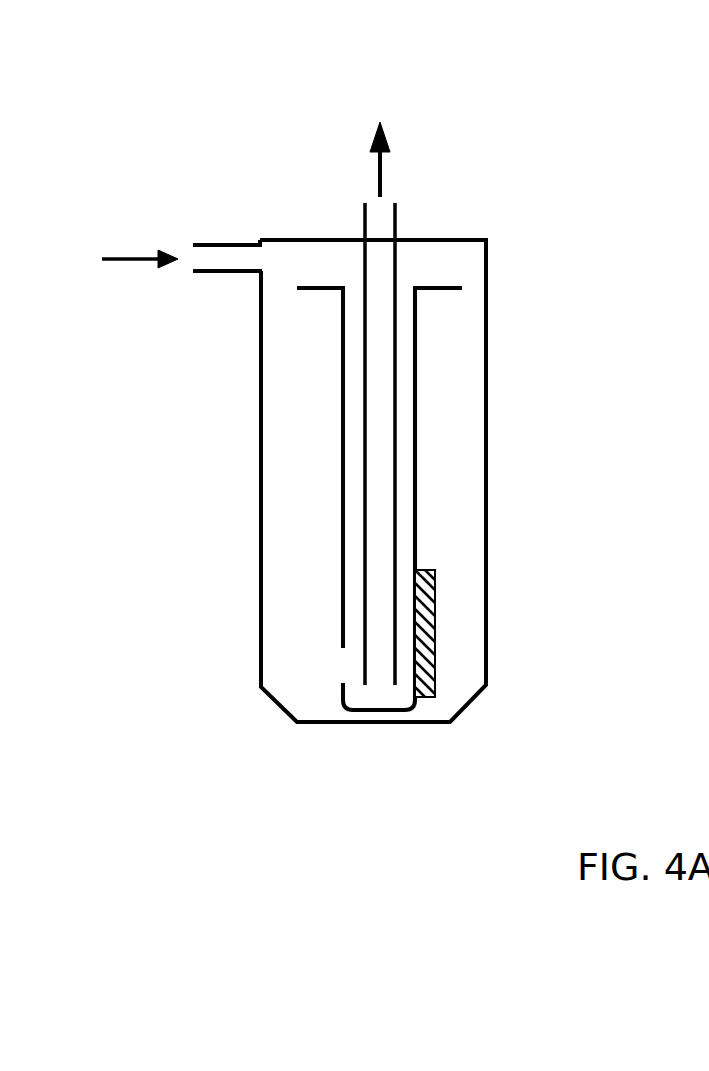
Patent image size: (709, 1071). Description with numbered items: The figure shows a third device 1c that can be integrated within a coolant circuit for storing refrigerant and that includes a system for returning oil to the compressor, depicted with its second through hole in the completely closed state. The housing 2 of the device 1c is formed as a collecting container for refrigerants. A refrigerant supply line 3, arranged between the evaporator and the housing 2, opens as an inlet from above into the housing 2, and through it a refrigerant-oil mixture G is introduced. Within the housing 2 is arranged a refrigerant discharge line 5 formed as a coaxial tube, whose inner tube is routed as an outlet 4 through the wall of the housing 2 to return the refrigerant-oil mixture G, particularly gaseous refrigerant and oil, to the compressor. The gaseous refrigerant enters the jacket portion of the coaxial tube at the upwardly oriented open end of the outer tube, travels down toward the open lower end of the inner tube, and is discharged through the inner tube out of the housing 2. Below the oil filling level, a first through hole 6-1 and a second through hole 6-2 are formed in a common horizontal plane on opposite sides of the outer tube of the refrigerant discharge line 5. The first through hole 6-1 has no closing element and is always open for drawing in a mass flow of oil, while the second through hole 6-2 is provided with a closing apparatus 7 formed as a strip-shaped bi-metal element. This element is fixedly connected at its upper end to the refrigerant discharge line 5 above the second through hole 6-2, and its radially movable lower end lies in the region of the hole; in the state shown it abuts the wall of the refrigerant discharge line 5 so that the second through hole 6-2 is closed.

The third device 1c is at (594, 115).
The housing 2 is at (488, 267).
The refrigerant supply line 3 is at (223, 250).
The outlet 4 is at (398, 213).
The refrigerant discharge line 5 is at (350, 467).
The first through hole 6-1 is at (343, 662).
The second through hole 6-2 is at (437, 683).
The closing apparatus 7 is at (437, 588).
The refrigerant-oil mixture G is at (158, 245).